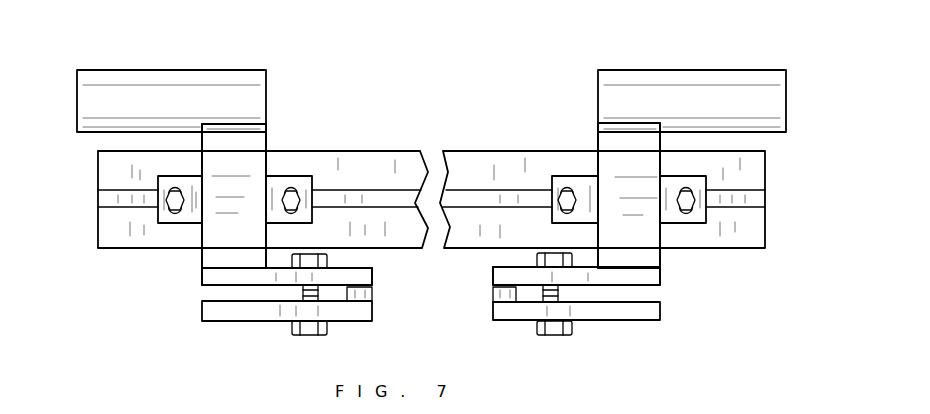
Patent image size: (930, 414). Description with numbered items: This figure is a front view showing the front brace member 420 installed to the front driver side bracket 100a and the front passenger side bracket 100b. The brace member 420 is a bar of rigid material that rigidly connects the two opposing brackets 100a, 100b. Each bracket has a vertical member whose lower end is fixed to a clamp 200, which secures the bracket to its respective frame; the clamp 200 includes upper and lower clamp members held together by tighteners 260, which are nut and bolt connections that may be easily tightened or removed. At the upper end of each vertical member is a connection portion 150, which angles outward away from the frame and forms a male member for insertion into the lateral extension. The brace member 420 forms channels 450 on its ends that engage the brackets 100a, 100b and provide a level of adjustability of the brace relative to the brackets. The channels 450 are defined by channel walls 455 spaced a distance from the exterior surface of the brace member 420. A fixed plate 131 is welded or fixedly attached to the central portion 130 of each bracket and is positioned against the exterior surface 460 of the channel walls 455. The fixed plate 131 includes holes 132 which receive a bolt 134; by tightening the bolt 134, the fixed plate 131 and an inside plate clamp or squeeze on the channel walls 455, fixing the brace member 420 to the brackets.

The front driver side bracket 100a is at (220, 260).
The front passenger side bracket 100b is at (632, 253).
The central portion 130 is at (220, 208).
The fixed plate 131 is at (192, 186).
The holes 132 is at (170, 190).
The bolt 134 is at (170, 212).
The connection portion 150 is at (213, 72).
The clamp 200 is at (366, 278).
The tighteners 260 is at (308, 337).
The front brace member 420 is at (395, 160).
The channels 450 is at (112, 200).
The channel walls 455 is at (110, 167).
The exterior surface 460 is at (353, 230).